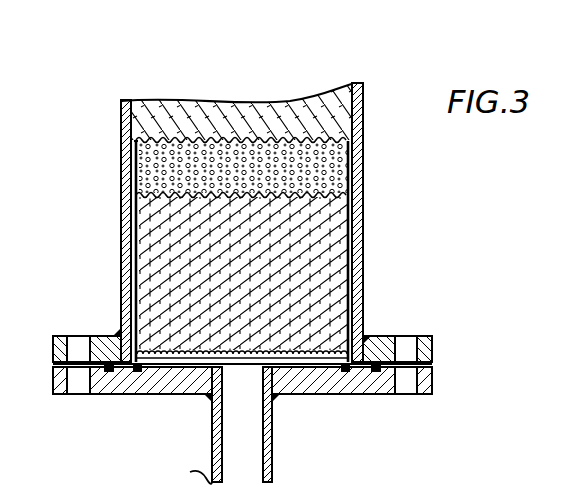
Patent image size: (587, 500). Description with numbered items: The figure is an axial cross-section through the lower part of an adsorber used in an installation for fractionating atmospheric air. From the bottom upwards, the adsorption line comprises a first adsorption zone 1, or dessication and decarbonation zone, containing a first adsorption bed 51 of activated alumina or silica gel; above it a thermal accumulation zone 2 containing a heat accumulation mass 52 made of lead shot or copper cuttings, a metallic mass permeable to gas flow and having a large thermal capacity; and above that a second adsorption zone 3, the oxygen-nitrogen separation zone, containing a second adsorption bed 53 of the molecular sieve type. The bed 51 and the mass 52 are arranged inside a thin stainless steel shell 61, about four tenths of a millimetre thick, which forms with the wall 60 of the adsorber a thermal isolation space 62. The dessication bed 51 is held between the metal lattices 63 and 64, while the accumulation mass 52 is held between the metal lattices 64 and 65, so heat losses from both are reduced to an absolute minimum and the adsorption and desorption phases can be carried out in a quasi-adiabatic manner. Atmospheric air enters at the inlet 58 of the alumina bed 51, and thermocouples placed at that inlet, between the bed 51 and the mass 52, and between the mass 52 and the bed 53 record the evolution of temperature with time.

The first adsorption zone 1 is at (296, 236).
The thermal accumulation zone 2 is at (158, 170).
The second adsorption zone 3 is at (181, 106).
The first adsorption bed 51 is at (330, 266).
The heat accumulation mass 52 is at (333, 158).
The second adsorption bed 53 is at (337, 112).
The inlet 58 is at (197, 368).
The wall 60 is at (363, 192).
The shell 61 is at (131, 218).
The thermal isolation space 62 is at (136, 253).
The metal lattice 63 is at (294, 352).
The metal lattice 64 is at (265, 190).
The metal lattice 65 is at (137, 143).